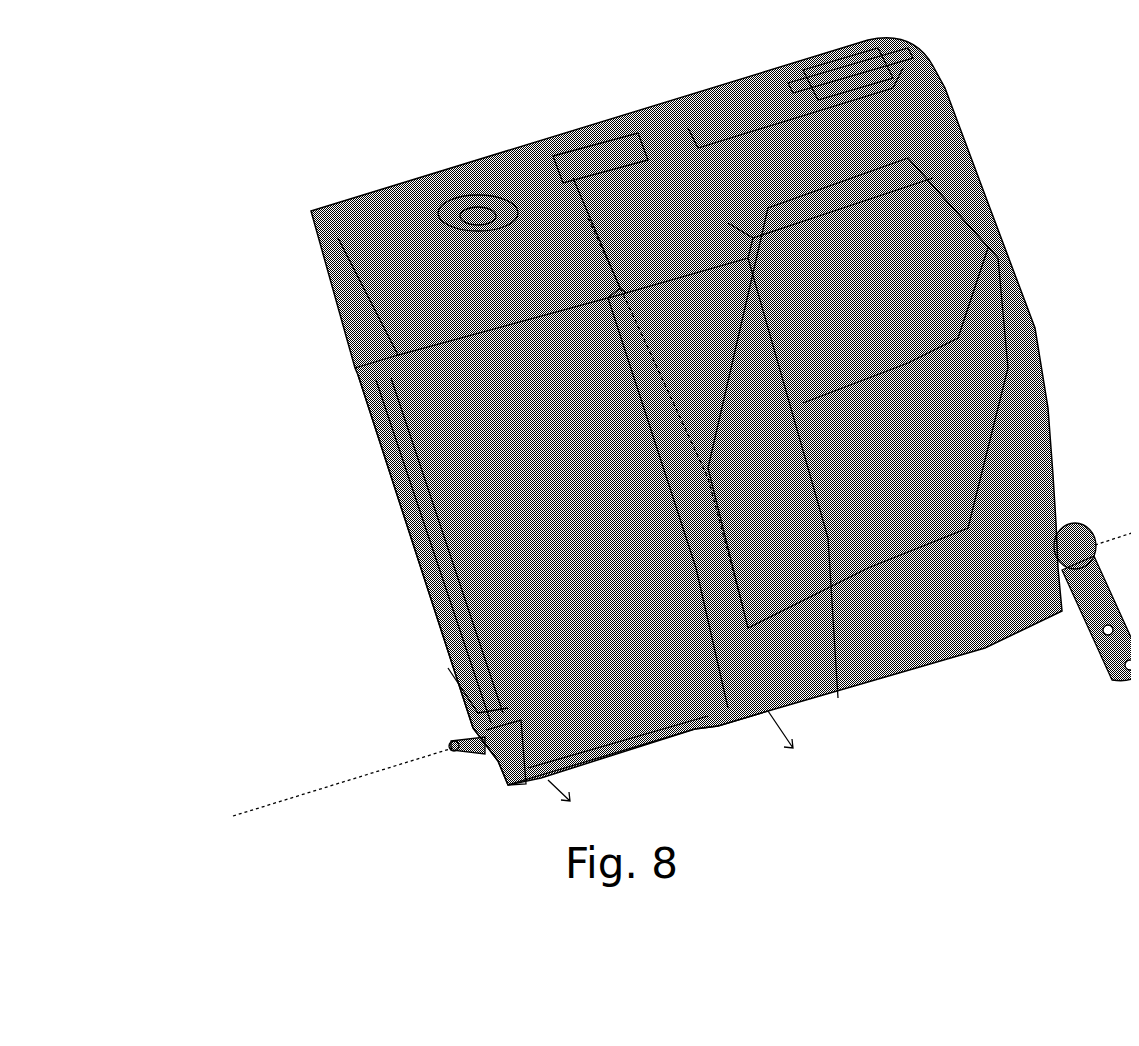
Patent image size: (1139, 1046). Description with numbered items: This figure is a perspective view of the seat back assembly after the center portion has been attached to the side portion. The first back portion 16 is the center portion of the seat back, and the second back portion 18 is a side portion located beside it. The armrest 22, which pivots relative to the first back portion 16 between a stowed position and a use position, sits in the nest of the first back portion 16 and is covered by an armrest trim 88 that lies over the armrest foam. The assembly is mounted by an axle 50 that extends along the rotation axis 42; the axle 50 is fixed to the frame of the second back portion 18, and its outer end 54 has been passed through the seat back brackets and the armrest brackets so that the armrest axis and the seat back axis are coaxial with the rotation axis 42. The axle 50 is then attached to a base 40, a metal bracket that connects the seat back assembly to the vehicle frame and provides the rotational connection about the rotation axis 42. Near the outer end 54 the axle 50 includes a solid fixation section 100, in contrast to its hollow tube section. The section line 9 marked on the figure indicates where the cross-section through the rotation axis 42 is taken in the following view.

The first back portion 16 is at (362, 184).
The second back portion 18 is at (727, 73).
The armrest 22 is at (390, 498).
The base 40 is at (1098, 660).
The rotation axis 42 is at (379, 770).
The axle 50 is at (455, 692).
The outer end 54 is at (450, 747).
The armrest trim 88 is at (700, 720).
The solid fixation section 100 is at (462, 728).
The section line 9- 9 is at (679, 773).